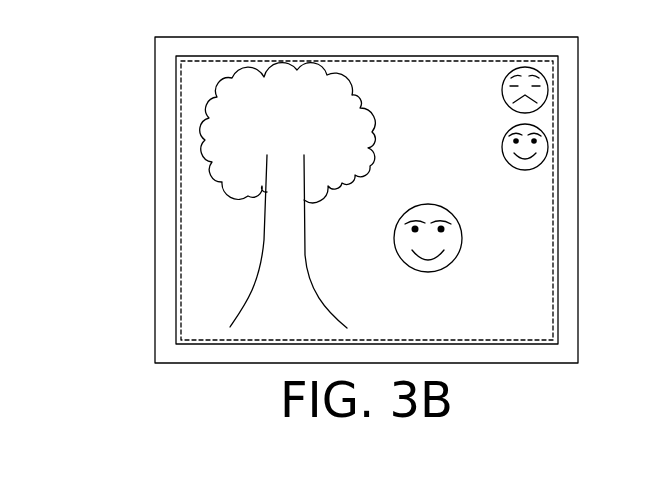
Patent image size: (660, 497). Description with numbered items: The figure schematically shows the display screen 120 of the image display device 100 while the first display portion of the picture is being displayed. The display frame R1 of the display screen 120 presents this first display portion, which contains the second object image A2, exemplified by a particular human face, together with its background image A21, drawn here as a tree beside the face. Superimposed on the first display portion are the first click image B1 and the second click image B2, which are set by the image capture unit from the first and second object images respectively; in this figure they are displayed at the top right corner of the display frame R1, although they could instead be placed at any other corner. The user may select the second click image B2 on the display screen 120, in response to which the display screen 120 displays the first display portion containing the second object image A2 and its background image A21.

The image display device 100 is at (138, 107).
The display screen 120 is at (176, 150).
The display frame R1 is at (181, 303).
The background image A21 is at (278, 242).
The second object image A2 is at (462, 238).
The first click image B1 is at (548, 89).
The second click image B2 is at (548, 146).